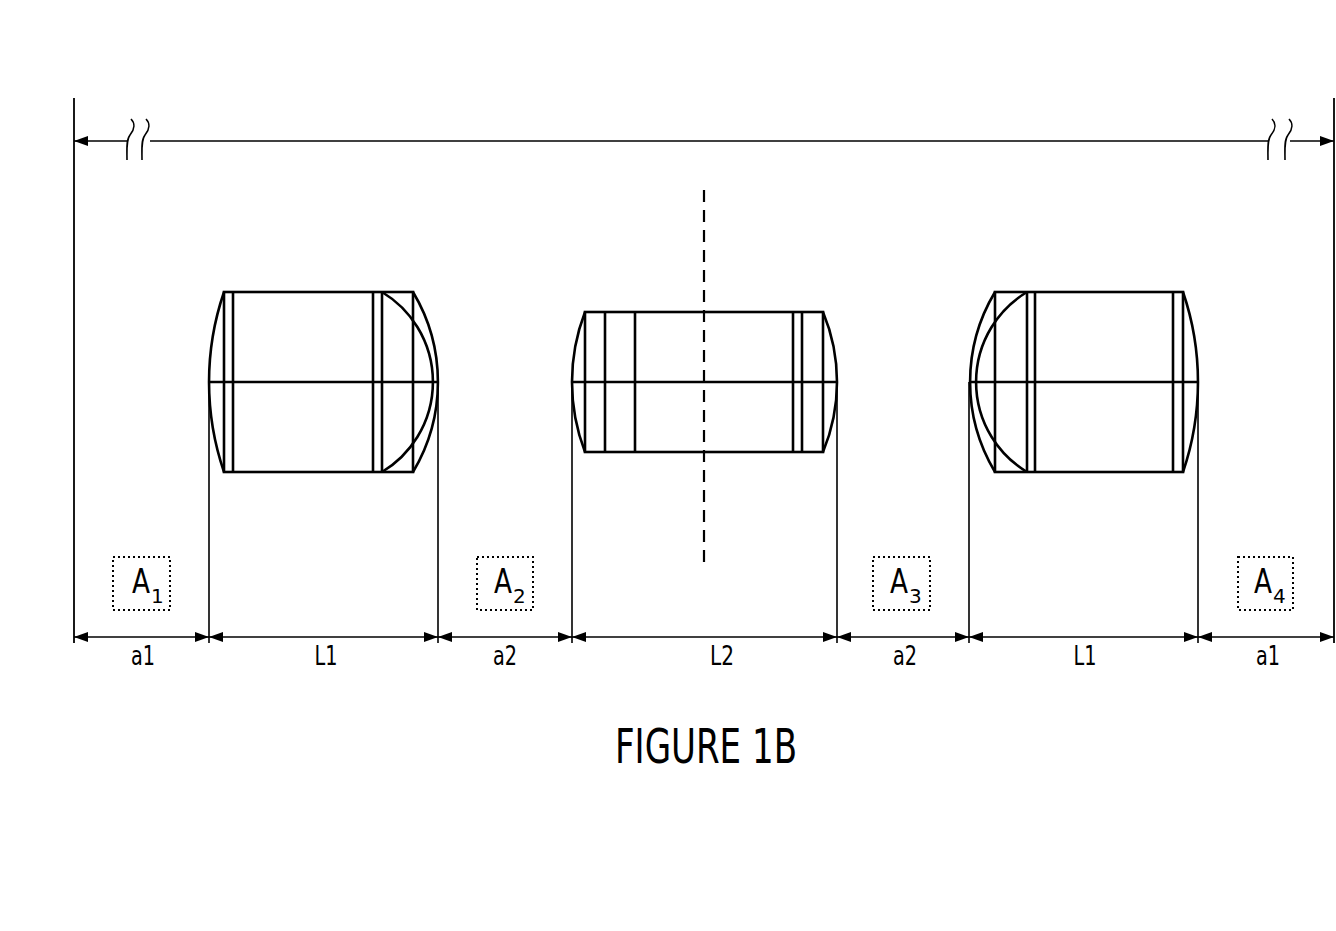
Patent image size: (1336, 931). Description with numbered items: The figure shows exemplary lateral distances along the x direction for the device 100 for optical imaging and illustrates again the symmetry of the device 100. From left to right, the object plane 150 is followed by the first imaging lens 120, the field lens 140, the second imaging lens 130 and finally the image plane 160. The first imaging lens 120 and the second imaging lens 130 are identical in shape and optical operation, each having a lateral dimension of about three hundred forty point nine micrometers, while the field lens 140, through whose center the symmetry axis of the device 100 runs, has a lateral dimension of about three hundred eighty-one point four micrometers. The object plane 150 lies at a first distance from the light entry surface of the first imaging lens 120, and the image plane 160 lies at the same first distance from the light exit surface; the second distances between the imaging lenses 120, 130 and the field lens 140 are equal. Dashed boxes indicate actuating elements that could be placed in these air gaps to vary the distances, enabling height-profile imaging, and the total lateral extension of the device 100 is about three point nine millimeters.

The device for optical imaging 100 is at (1030, 103).
The first imaging lens 120 is at (310, 472).
The second imaging lens 130 is at (1097, 472).
The field lens 140 is at (651, 452).
The object plane 150 is at (74, 121).
The image plane 160 is at (1334, 121).